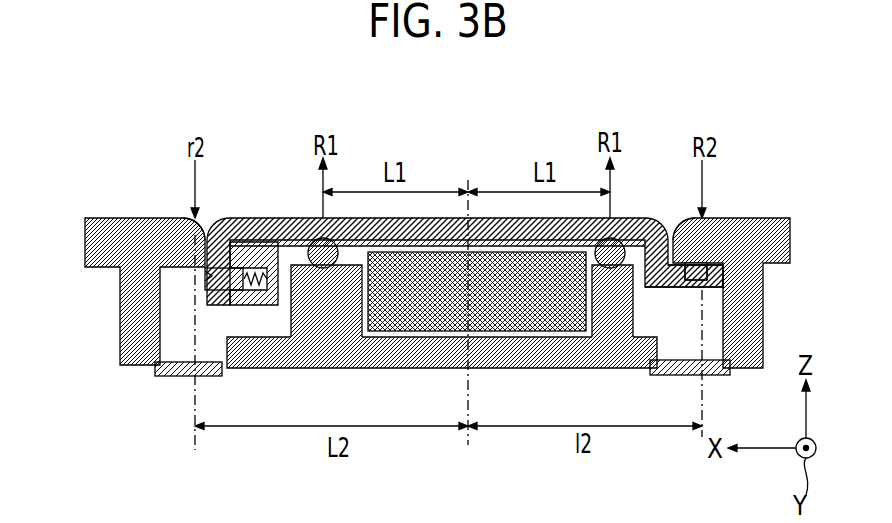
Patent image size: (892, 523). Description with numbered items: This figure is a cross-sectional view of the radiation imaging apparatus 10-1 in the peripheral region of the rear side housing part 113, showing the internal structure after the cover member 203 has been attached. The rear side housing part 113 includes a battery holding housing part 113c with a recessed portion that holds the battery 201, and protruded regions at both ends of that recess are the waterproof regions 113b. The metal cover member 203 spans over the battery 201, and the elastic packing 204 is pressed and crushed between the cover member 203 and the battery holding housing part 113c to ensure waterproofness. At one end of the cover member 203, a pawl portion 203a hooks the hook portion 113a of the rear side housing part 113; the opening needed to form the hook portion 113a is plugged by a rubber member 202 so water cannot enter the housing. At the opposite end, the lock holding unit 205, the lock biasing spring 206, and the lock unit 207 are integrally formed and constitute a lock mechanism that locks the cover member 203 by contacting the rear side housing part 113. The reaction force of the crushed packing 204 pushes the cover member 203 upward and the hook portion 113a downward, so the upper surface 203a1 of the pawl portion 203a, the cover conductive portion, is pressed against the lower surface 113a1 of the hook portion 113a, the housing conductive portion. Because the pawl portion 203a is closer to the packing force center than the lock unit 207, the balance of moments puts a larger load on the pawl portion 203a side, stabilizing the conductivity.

The radiation imaging apparatus 10-1 is at (517, 98).
The rear side housing part 113 is at (140, 357).
The hook portion 113a is at (187, 253).
The lower surface of the hook portion 113a1 is at (683, 268).
The waterproof regions 113b is at (323, 268).
The battery holding housing part 113c is at (427, 370).
The battery 201 is at (557, 312).
The rubber member 202 is at (190, 366).
The cover member 203 is at (230, 222).
The pawl portion 203a is at (717, 287).
The upper surface of the pawl portion 203a1 is at (711, 257).
The packing 204 is at (313, 241).
The lock holding unit 205 is at (268, 281).
The lock biasing spring 206 is at (250, 304).
The lock unit 207 is at (207, 276).